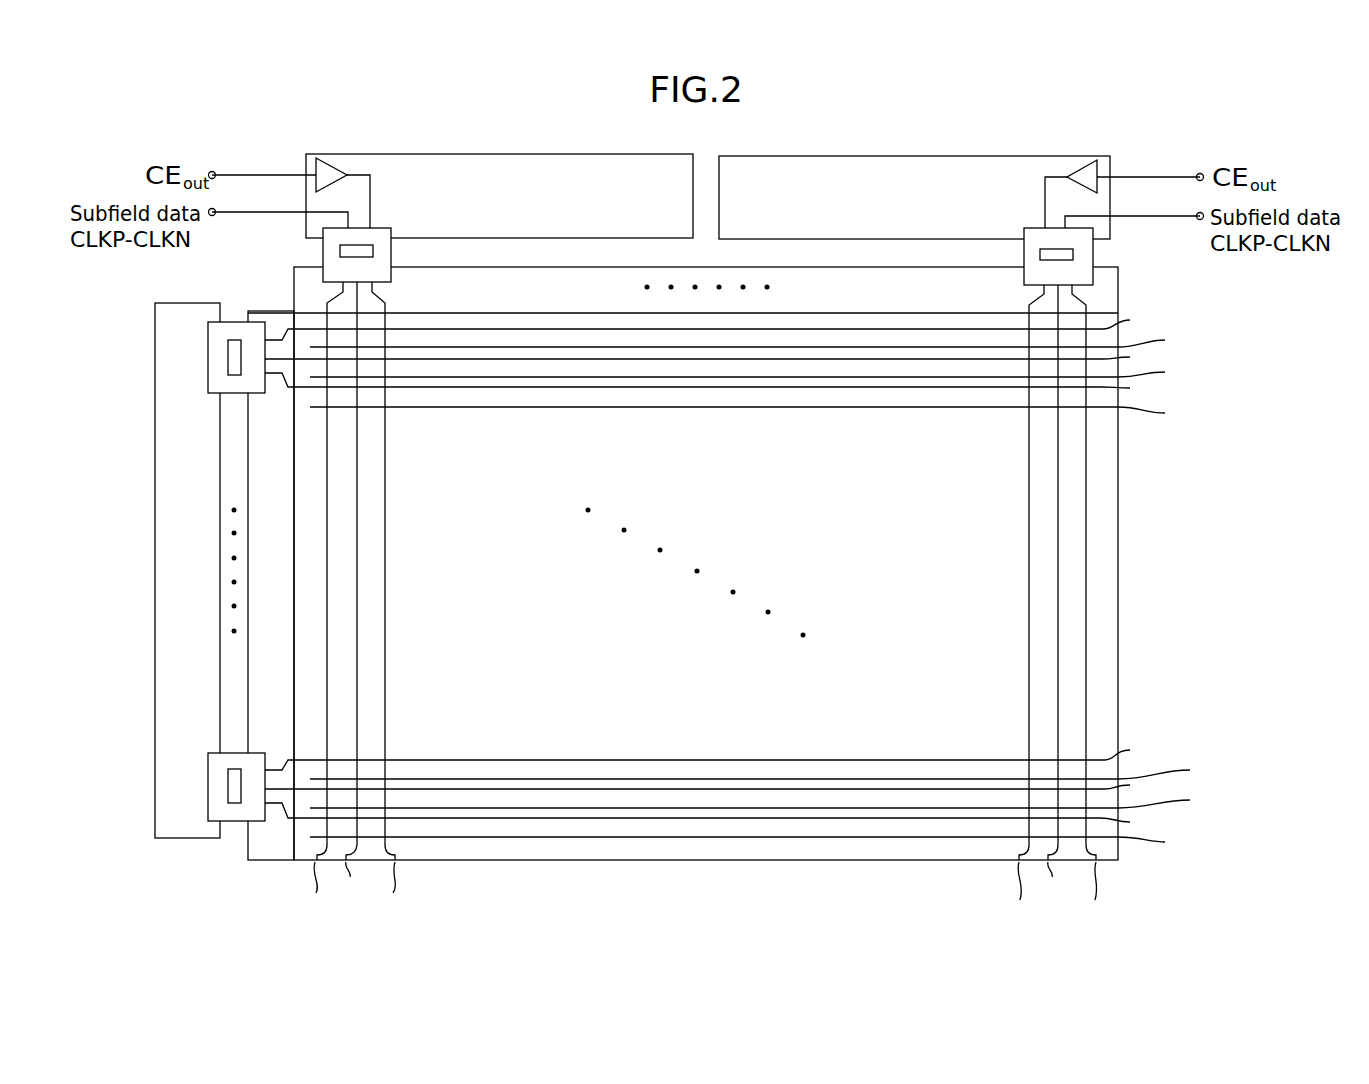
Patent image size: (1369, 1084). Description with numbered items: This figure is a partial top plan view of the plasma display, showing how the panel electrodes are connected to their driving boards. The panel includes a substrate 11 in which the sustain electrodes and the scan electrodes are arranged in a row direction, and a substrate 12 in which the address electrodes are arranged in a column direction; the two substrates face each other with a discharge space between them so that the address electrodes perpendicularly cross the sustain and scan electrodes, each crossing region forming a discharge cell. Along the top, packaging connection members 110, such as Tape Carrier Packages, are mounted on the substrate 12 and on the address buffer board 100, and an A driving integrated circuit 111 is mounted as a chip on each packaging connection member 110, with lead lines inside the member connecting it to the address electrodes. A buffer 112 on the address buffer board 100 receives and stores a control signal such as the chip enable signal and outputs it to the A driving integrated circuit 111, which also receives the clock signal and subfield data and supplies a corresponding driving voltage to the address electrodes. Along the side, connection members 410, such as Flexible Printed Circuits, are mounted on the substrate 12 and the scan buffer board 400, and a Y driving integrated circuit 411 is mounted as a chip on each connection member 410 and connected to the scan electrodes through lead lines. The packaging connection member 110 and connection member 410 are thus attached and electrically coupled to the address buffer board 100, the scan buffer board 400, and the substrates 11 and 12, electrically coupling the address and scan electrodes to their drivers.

The substrate 12 is at (1118, 557).
The substrate 11 is at (248, 851).
The address buffer board 100 is at (392, 154).
The packaging connection member 110 is at (323, 247).
The A driving integrated circuit 111 is at (338, 252).
The buffer 112 is at (313, 162).
The scan buffer board 400 is at (155, 571).
The connection member 410 is at (208, 329).
The Y driving integrated circuit 411 is at (228, 357).